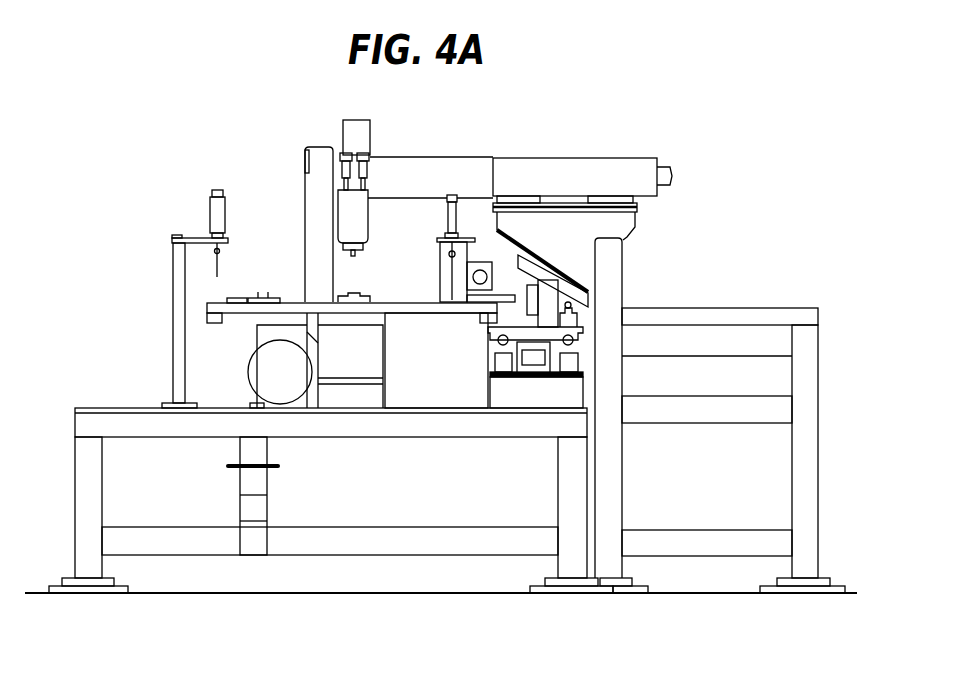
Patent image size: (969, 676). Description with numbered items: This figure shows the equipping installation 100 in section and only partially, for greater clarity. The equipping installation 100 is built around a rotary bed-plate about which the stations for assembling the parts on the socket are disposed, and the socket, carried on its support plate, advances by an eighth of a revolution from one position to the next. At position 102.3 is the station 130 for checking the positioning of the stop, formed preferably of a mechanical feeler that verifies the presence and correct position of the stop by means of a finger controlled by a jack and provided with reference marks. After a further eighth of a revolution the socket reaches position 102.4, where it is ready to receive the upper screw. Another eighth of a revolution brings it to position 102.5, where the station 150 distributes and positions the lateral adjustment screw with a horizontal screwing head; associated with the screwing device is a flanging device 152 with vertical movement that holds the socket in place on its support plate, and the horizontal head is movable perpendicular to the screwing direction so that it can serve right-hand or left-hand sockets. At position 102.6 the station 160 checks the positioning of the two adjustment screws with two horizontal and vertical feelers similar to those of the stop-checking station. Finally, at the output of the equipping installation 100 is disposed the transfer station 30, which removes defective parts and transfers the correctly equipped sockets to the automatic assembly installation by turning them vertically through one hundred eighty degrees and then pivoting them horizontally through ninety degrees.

The equipping installation 100 is at (612, 146).
The station for checking the positioning of the stop 130 is at (205, 218).
The station for distributing and positioning the lateral adjustment screw 150 is at (337, 125).
The flanging device 152 is at (378, 151).
The station for checking the positioning of the two adjustment screws 160 is at (462, 221).
The transfer station 30 is at (590, 327).
The position of the support plate 102.3 is at (231, 298).
The position of the support plate 102.4 is at (268, 298).
The position of the support plate 102.5 is at (358, 296).
The position of the support plate 102.6 is at (417, 313).